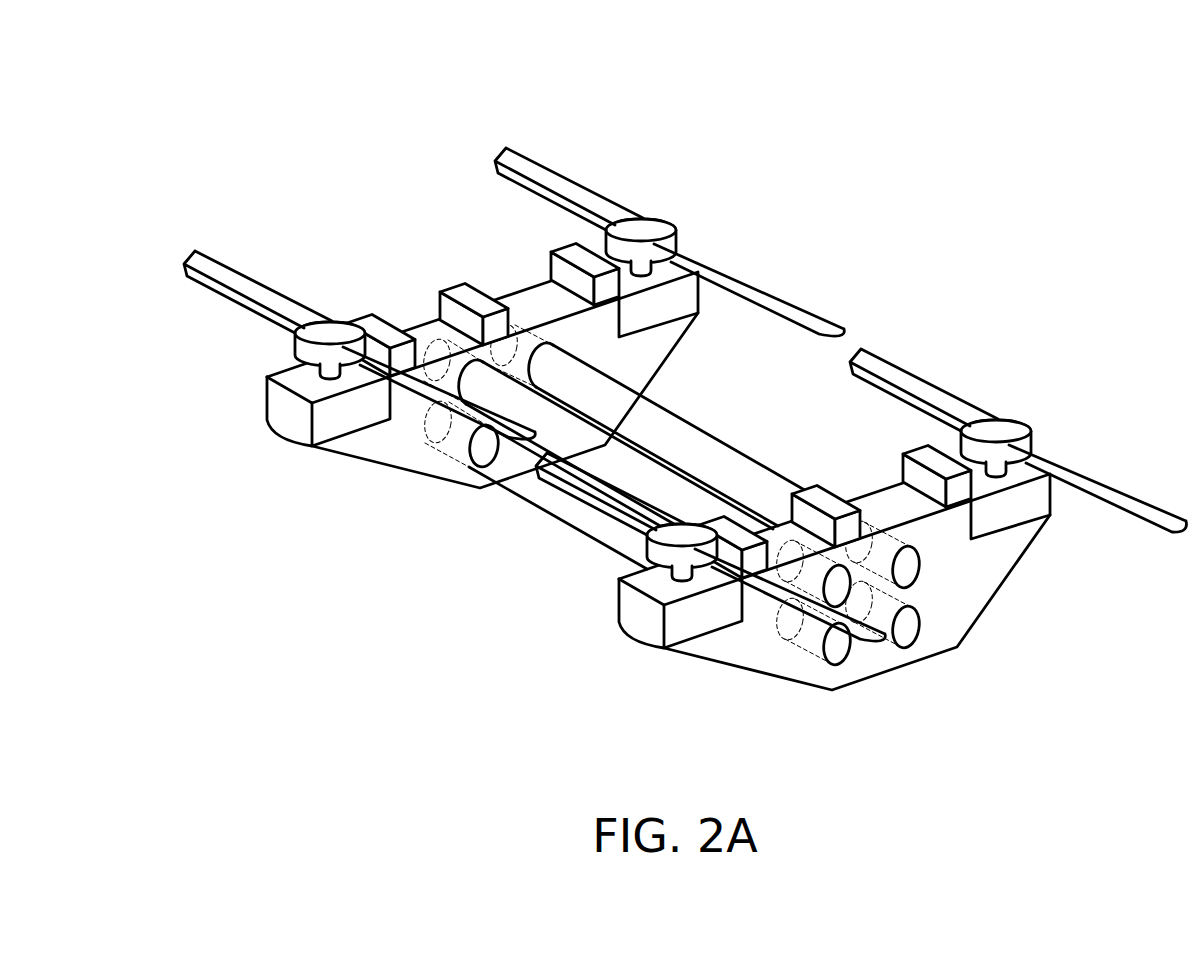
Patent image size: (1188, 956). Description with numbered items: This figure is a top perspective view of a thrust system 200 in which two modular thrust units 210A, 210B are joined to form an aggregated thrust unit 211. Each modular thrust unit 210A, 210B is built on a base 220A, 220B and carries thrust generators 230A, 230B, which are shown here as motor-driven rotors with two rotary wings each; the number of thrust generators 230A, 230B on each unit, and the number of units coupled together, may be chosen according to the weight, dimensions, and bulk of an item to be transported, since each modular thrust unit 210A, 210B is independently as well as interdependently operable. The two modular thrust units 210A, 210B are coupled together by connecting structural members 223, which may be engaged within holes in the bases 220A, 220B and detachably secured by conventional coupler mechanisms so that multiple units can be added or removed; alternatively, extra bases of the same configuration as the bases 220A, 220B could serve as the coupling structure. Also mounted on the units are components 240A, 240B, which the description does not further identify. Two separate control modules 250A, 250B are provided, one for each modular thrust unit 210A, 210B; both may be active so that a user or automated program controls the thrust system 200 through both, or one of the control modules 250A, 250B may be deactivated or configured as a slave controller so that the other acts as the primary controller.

The thrust system 200 is at (216, 104).
The aggregated thrust unit 211 is at (981, 212).
The modular thrust unit 210A is at (237, 494).
The modular thrust unit 210B is at (574, 690).
The base 220A is at (395, 442).
The base 220B is at (747, 645).
The connecting structural members 223 is at (613, 458).
The thrust generators 230A is at (318, 266).
The thrust generators 230B is at (1043, 559).
The first battery units 240A is at (380, 328).
The second battery units 240B is at (933, 448).
The control module 250A is at (478, 298).
The control module 250B is at (836, 498).